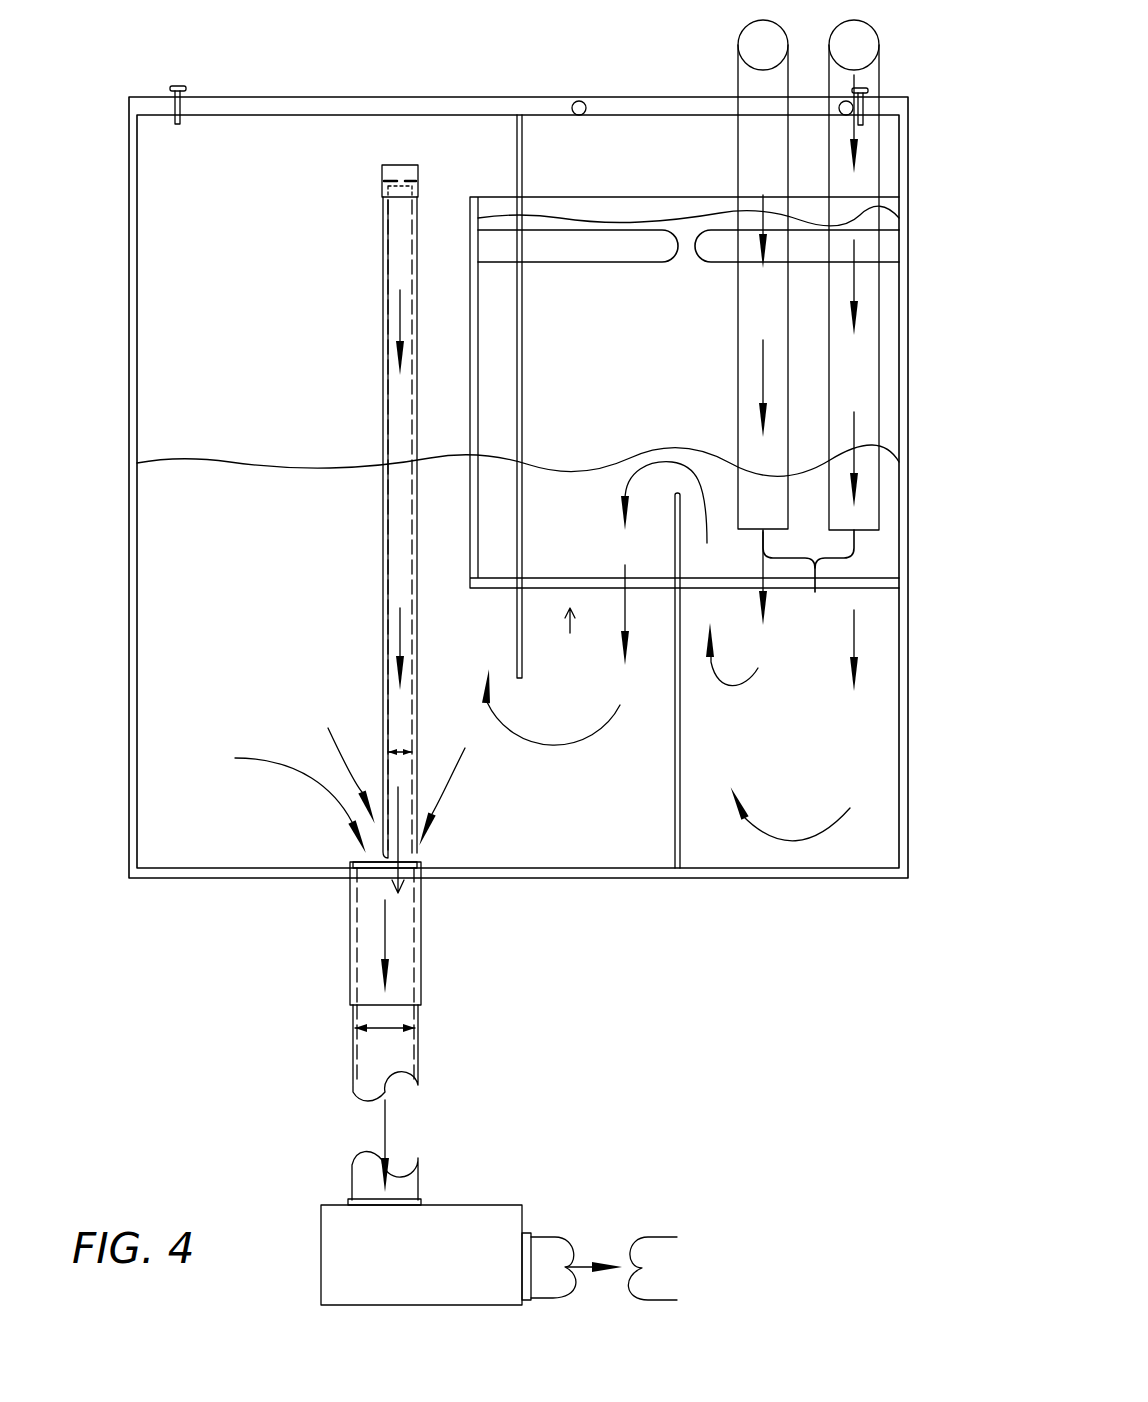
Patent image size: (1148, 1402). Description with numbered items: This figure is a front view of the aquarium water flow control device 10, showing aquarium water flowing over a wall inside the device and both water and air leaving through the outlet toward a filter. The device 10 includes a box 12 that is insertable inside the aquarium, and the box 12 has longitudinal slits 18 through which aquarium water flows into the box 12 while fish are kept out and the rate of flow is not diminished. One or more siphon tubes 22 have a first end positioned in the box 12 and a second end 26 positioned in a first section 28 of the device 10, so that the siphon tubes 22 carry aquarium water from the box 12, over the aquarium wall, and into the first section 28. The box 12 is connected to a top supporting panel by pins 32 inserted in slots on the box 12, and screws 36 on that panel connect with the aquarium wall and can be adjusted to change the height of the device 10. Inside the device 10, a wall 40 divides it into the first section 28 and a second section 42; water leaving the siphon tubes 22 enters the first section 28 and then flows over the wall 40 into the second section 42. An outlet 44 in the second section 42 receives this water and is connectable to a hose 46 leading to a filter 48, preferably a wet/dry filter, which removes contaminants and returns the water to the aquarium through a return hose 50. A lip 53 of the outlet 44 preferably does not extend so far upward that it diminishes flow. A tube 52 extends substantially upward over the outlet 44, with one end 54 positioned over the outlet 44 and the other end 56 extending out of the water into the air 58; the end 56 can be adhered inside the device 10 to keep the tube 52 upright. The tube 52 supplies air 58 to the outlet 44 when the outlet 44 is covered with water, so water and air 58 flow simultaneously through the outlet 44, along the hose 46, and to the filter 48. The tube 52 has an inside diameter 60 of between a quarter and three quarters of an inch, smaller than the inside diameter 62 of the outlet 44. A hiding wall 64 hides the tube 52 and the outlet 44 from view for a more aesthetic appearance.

The aquarium water flow control device 10 is at (253, 62).
The box 12 is at (568, 636).
The longitudinal slits 18 is at (647, 249).
The siphon tubes 22 is at (738, 88).
The second end 26 is at (808, 610).
The first section 28 is at (860, 858).
The pins 32 is at (581, 101).
The screws 36 is at (177, 85).
The wall 40 is at (675, 812).
The second section 42 is at (530, 858).
The outlet 44 is at (422, 855).
The hose 46 is at (397, 1056).
The filter 48 is at (466, 1192).
The return hose 50 is at (548, 1222).
The tube 52 is at (390, 545).
The lip 53 is at (360, 862).
The end 54 is at (372, 806).
The other end 56 is at (412, 163).
The air 58 is at (384, 124).
The inside diameter 60 is at (398, 750).
The inside diameter 62 is at (385, 1026).
The hiding wall 64 is at (522, 415).